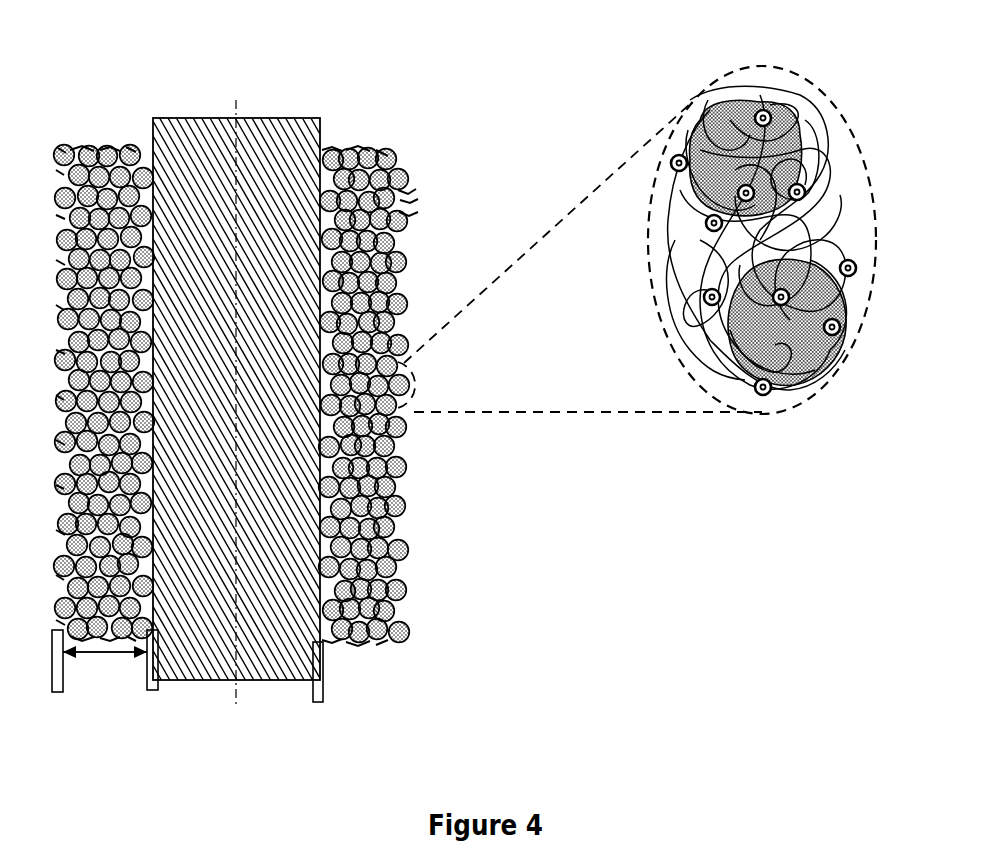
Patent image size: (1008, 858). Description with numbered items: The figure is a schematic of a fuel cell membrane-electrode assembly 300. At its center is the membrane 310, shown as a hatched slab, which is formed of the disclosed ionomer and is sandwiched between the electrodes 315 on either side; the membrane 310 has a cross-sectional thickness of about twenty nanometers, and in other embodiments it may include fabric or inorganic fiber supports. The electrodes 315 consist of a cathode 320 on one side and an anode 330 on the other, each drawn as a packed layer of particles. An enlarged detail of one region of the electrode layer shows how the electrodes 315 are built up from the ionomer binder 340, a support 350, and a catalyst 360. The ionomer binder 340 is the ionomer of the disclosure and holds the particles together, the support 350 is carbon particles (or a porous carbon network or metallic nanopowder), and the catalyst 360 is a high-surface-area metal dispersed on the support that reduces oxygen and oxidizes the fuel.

The membrane-electrode assembly 300 is at (388, 34).
The membrane 310 is at (268, 118).
The electrodes 315 is at (396, 133).
The cathode 320 is at (357, 148).
The anode 330 is at (115, 147).
The ionomer binder 340 is at (406, 196).
The support 350 is at (403, 445).
The catalyst 360 is at (703, 299).